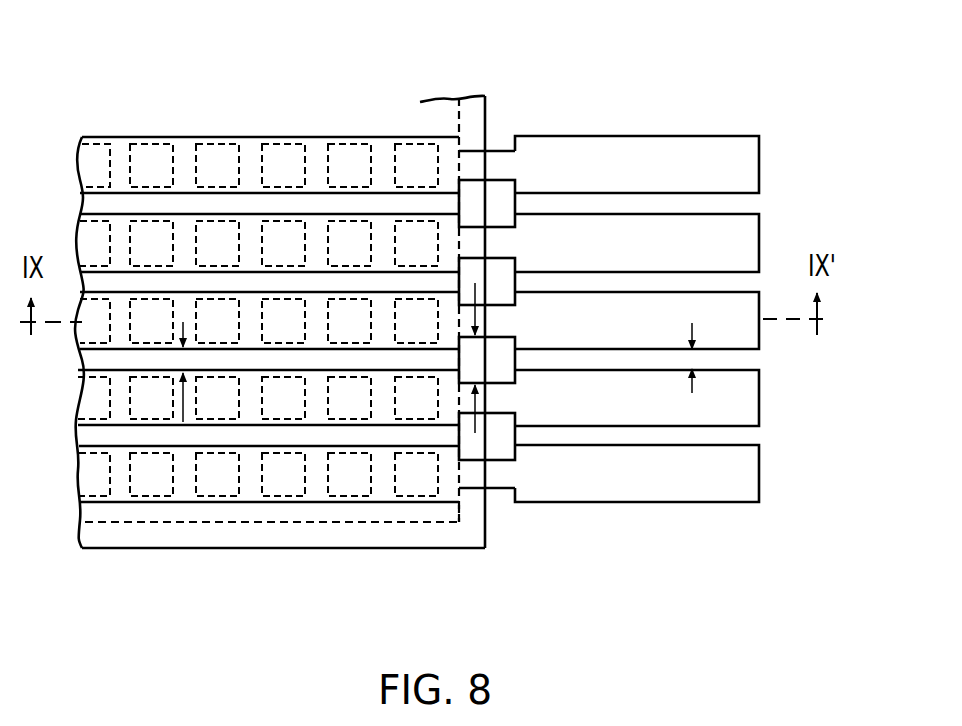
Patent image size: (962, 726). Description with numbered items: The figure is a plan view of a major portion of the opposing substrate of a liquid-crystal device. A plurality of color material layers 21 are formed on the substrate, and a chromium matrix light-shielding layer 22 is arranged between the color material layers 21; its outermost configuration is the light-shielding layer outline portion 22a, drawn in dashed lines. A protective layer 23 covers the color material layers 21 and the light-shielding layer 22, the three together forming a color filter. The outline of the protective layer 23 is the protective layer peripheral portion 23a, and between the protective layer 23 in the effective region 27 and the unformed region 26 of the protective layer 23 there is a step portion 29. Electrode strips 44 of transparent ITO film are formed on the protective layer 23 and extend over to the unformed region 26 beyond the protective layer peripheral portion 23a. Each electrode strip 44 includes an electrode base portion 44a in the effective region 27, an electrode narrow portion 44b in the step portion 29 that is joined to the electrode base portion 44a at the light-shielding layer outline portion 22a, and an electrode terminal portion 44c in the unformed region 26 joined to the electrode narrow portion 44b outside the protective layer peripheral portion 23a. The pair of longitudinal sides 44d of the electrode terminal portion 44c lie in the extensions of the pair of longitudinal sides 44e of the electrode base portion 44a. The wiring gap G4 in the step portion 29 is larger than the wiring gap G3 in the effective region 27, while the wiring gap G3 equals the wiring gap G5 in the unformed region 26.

The color material layer 21 is at (160, 237).
The light-shielding layer 22 is at (407, 522).
The light-shielding layer outline portion 22a is at (460, 514).
The protective layer 23 is at (472, 112).
The protective layer peripheral portion 23a is at (487, 122).
The unformed region 26 is at (642, 304).
The effective region 27 is at (241, 342).
The step portion 29 is at (472, 87).
The electrode strip 44 is at (642, 320).
The electrode base portion 44a is at (284, 140).
The electrode narrow portion 44b is at (500, 148).
The electrode terminal portion 44c is at (614, 150).
The sides of the electrode terminal portion 44d is at (723, 444).
The sides of the electrode base portion 44e is at (112, 447).
The wiring gap in the effective region G3 is at (183, 357).
The wiring gap in the step portion G4 is at (475, 360).
The wiring gap in the unformed region G5 is at (693, 358).